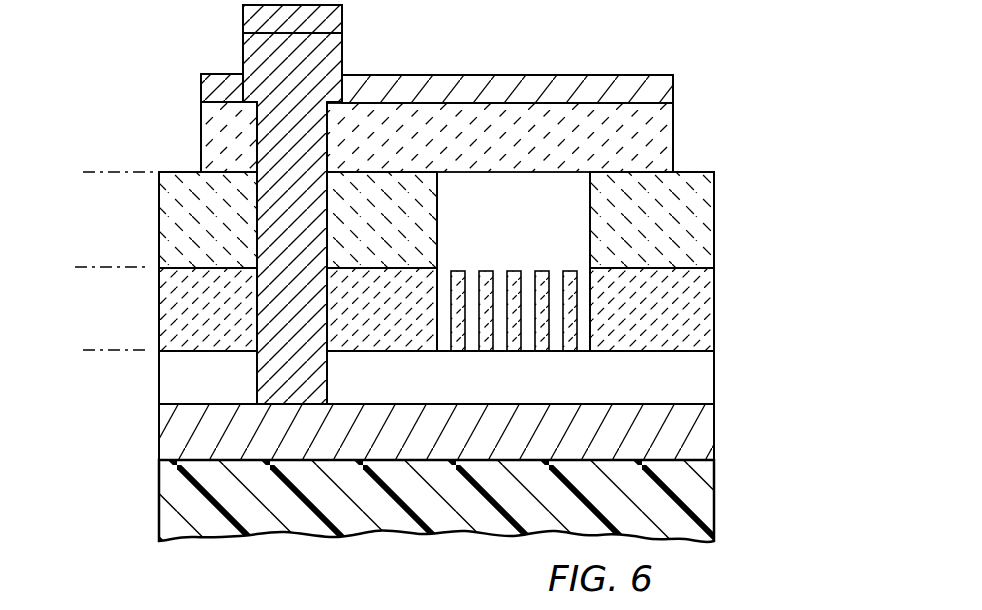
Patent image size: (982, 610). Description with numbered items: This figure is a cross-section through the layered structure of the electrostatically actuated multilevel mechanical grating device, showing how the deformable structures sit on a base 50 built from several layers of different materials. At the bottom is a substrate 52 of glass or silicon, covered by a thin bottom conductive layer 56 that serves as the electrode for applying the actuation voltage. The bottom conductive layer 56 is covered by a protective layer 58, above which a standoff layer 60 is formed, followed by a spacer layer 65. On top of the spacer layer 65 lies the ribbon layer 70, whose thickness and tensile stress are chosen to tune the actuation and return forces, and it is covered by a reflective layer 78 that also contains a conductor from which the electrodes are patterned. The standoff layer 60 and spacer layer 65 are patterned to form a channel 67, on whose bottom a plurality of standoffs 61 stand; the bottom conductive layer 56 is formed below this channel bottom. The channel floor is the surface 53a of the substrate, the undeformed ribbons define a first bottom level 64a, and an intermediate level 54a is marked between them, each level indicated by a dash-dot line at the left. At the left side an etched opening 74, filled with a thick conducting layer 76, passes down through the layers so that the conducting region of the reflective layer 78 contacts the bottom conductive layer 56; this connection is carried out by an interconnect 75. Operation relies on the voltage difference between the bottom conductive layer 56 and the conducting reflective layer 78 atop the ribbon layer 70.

The base 50 is at (125, 462).
The substrate 52 is at (705, 502).
The surface of the substrate 53a is at (96, 352).
The upper surface of conductive layer 54a is at (97, 267).
The bottom conductive layer 56 is at (705, 433).
The protective layer 58 is at (700, 380).
The standoff layer 60 is at (705, 325).
The standoffs 61 is at (513, 271).
The first bottom level 64a is at (95, 172).
The spacer layer 65 is at (702, 222).
The channel 67 is at (541, 233).
The ribbon layer 70 is at (668, 140).
The etched opening 74 is at (255, 193).
The interconnect 75 is at (243, 37).
The thick conducting layer 76 is at (262, 93).
The reflective layer 78 is at (333, 18).